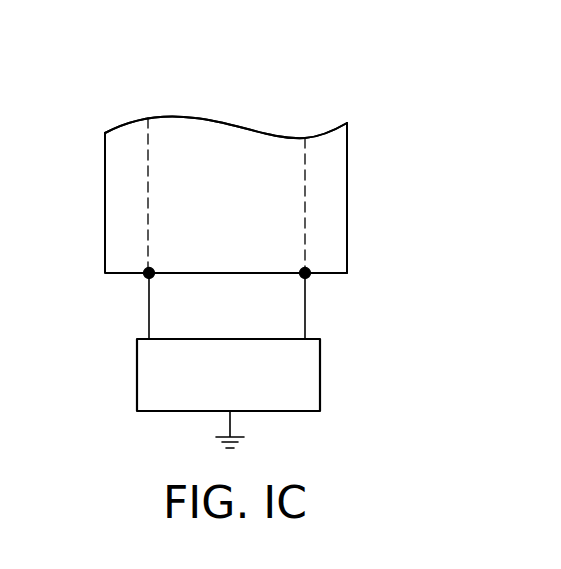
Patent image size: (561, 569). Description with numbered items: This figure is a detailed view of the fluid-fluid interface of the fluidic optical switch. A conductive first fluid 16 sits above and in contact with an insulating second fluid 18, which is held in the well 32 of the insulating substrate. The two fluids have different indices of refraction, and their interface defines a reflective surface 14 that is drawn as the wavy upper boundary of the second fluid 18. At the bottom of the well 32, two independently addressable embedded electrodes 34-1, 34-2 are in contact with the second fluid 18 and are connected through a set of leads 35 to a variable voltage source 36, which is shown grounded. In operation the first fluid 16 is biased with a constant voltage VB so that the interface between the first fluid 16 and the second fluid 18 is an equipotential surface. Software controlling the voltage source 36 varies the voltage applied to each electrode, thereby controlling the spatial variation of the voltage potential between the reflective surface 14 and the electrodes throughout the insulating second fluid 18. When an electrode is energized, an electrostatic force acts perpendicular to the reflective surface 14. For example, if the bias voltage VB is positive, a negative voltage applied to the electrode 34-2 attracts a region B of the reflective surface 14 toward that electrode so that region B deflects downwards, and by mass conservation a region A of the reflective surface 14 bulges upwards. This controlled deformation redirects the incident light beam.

The reflective surface 14 is at (338, 125).
The first fluid 16 is at (229, 41).
The second fluid 18 is at (234, 207).
The well 32 is at (347, 177).
The electrode 34-1 is at (143, 277).
The electrode 34-2 is at (308, 276).
The leads 35 is at (148, 322).
The variable voltage source 36 is at (321, 388).
The region A of the reflective surface A is at (150, 117).
The region B of the reflective surface B is at (303, 138).
The bias voltage VB is at (120, 122).